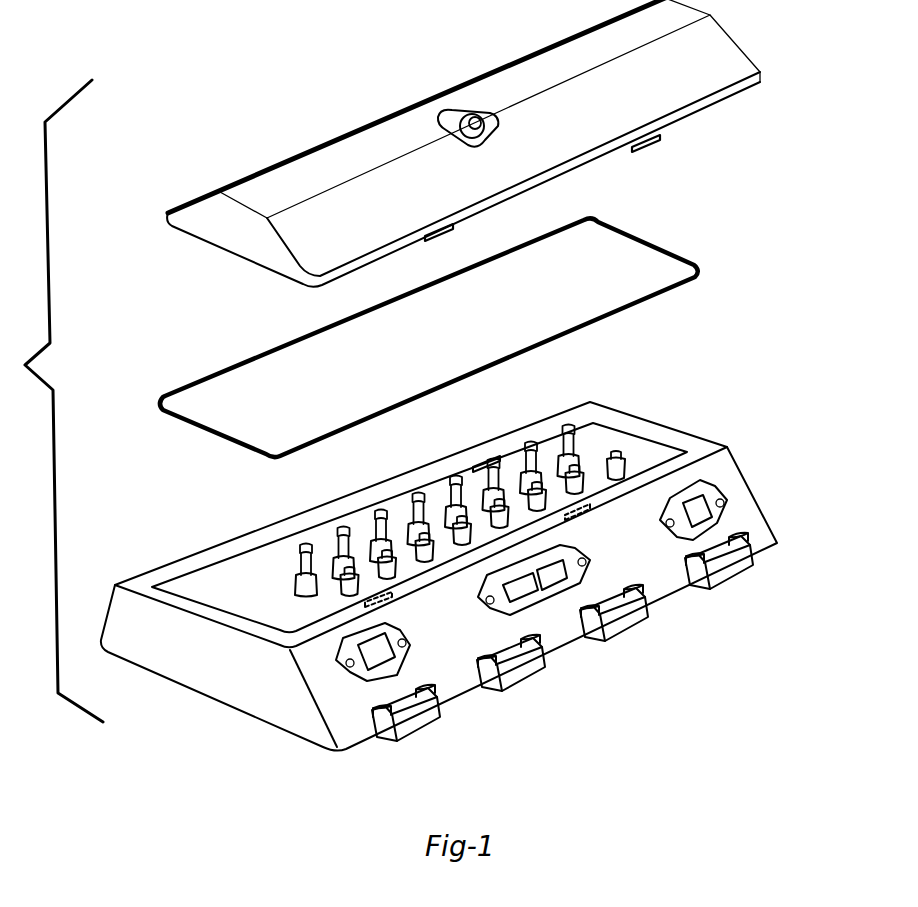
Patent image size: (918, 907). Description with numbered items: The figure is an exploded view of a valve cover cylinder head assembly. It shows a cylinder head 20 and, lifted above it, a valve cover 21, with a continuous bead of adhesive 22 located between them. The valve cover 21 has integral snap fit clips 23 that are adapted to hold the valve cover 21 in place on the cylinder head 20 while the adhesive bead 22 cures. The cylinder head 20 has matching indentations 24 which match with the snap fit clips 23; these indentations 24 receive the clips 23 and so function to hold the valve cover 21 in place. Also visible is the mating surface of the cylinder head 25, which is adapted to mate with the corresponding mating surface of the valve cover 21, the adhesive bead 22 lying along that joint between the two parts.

The cylinder head 20 is at (223, 686).
The valve cover 21 is at (682, 85).
The continuous bead of adhesive 22 is at (433, 288).
The integral snap fit clips 23 is at (648, 153).
The matching indentations 24 is at (477, 463).
The mating surface of the cylinder head 25 is at (252, 534).